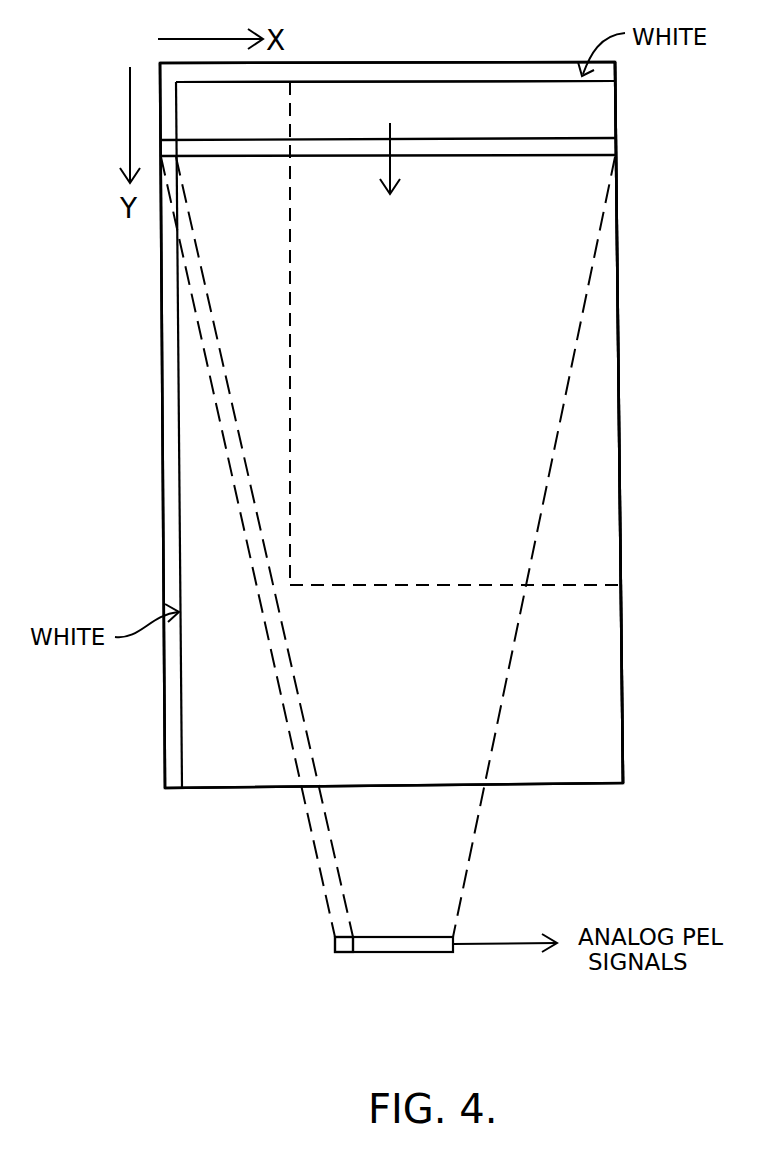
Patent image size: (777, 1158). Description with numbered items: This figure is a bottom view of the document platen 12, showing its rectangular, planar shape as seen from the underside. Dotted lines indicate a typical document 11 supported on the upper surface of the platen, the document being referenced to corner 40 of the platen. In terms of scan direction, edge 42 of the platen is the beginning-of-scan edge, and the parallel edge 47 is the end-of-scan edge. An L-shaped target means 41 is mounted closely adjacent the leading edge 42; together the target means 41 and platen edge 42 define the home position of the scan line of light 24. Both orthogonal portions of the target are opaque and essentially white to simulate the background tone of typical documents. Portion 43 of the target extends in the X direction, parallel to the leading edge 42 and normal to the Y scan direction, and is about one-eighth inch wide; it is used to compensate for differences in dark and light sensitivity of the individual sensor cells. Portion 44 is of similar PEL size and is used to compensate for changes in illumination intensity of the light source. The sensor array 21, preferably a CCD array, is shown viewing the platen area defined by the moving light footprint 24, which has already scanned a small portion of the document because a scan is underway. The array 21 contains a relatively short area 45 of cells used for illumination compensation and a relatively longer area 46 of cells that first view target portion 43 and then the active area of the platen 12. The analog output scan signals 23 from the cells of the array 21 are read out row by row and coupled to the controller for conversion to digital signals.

The document 11 is at (293, 548).
The platen 12 is at (620, 416).
The sensor array 21 is at (346, 958).
The analog output scan signals 23 is at (488, 946).
The scan line of light 24 is at (313, 152).
The corner of the platen 40 is at (613, 82).
The target means 41 is at (396, 56).
The leading edge of the platen 42 is at (392, 83).
The target portion 43 is at (517, 74).
The target portion 44 is at (170, 390).
The short area of sensor cells 45 is at (345, 943).
The long area of sensor cells 46 is at (397, 945).
The end of scan edge 47 is at (500, 786).